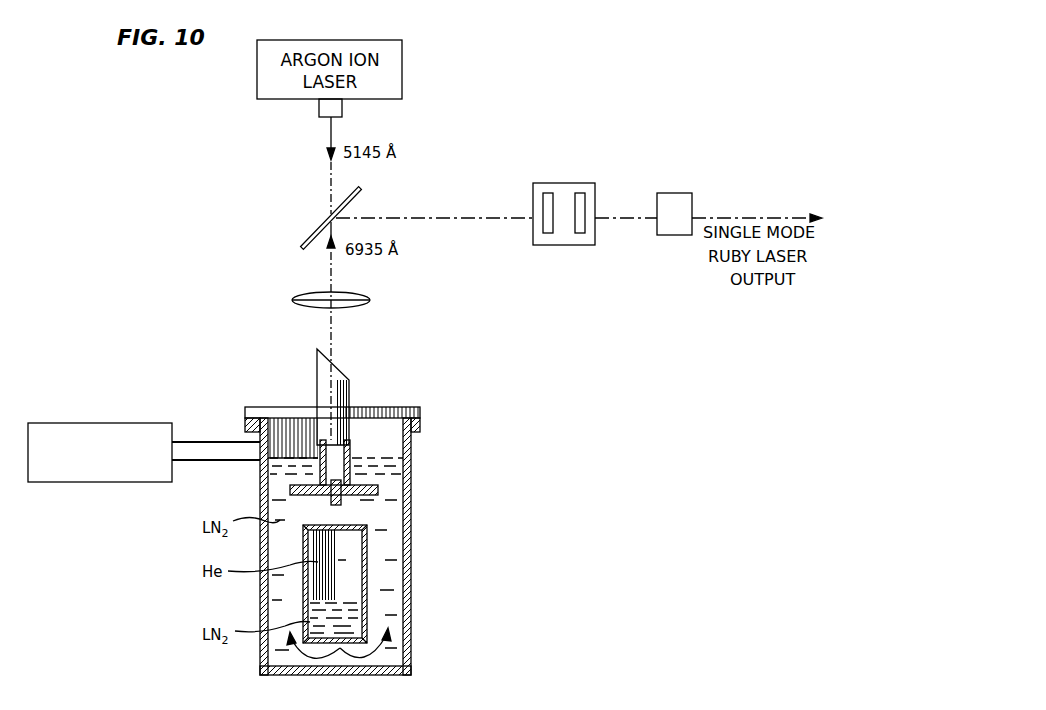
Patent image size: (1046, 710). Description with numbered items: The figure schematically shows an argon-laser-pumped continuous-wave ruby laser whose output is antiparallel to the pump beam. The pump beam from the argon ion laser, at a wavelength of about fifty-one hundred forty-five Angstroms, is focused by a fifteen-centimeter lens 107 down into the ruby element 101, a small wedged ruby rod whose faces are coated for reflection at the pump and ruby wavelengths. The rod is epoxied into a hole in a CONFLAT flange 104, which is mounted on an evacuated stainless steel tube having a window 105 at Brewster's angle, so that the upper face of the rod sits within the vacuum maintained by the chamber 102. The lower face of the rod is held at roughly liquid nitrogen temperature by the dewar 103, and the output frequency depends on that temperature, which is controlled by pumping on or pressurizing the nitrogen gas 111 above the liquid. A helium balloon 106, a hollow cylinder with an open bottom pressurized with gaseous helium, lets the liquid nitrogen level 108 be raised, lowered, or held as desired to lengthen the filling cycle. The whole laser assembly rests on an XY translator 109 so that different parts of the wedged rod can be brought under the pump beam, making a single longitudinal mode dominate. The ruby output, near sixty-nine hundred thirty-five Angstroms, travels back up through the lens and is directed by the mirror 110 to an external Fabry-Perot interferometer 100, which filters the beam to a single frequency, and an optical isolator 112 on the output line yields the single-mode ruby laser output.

The Fabry-Perot interferometer 100 is at (597, 198).
The ruby element 101 is at (345, 511).
The chamber 102 is at (362, 444).
The dewar 103 is at (411, 541).
The flange 104 is at (378, 491).
The window 105 is at (353, 373).
The helium balloon 106 is at (368, 612).
The lens 107 is at (365, 294).
The liquid nitrogen level 108 is at (375, 459).
The XY translator 109 is at (131, 423).
The mirror 110 is at (318, 231).
The nitrogen gas 111 is at (369, 425).
The optical isolator 112 is at (694, 203).